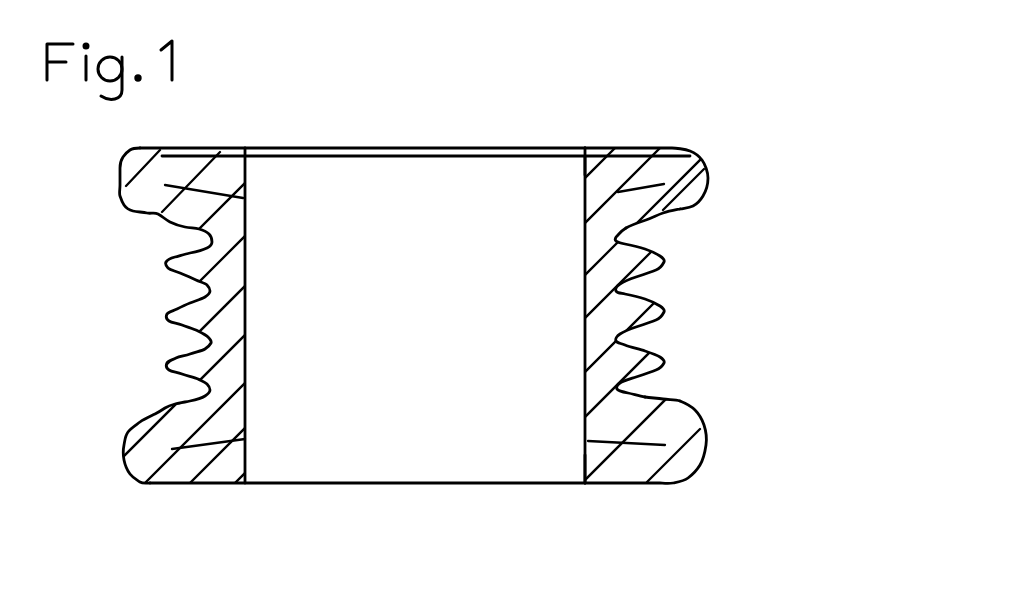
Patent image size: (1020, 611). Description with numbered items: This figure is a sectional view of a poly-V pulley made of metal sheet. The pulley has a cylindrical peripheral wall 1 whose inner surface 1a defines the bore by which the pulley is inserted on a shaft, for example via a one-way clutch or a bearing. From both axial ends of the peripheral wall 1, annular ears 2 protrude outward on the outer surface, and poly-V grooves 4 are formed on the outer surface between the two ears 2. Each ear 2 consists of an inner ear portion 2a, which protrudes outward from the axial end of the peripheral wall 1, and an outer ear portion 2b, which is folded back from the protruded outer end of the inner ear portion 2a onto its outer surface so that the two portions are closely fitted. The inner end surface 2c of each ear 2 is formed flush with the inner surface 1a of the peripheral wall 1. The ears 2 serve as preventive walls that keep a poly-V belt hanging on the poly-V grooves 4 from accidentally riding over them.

The cylindrical peripheral wall 1 is at (591, 355).
The inner surface of the peripheral wall 1a is at (583, 302).
The annular ear 2 is at (836, 92).
The inner ear portion 2a is at (662, 220).
The outer ear portion 2b is at (620, 165).
The inner end surface of the ear 2c is at (583, 167).
The poly-V grooves 4 is at (655, 335).